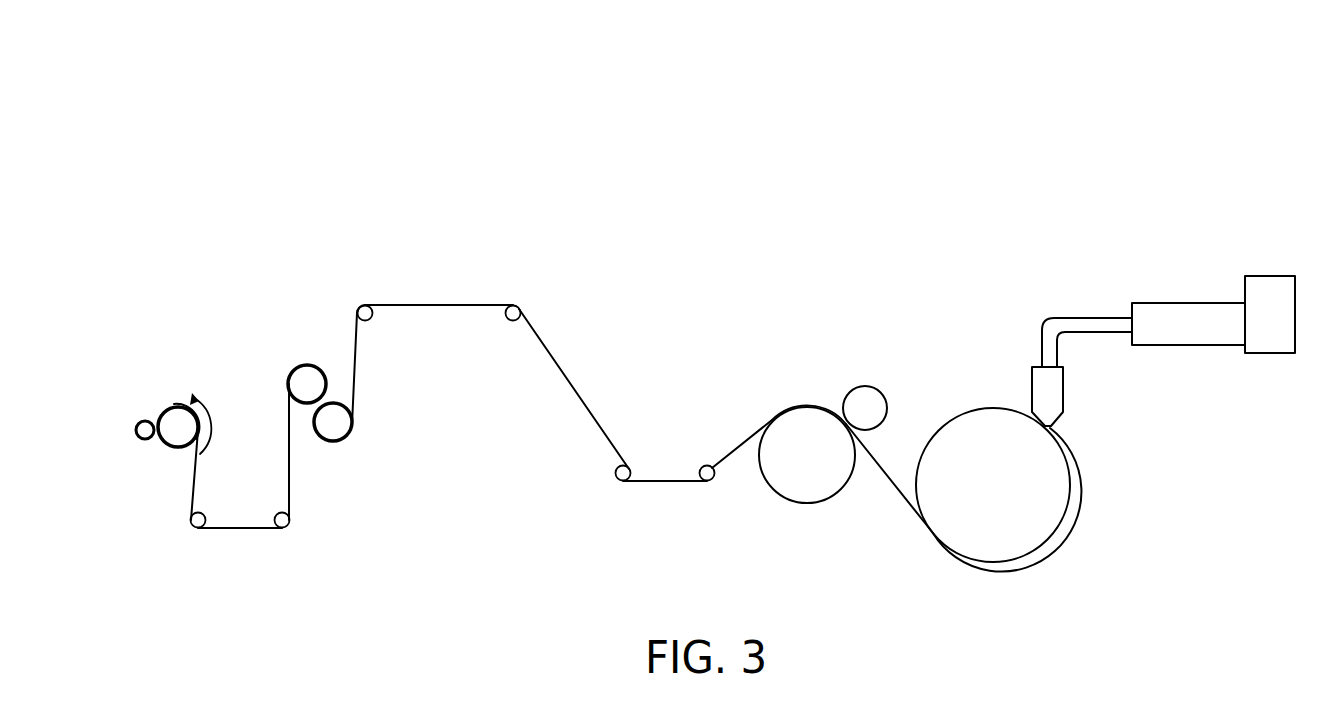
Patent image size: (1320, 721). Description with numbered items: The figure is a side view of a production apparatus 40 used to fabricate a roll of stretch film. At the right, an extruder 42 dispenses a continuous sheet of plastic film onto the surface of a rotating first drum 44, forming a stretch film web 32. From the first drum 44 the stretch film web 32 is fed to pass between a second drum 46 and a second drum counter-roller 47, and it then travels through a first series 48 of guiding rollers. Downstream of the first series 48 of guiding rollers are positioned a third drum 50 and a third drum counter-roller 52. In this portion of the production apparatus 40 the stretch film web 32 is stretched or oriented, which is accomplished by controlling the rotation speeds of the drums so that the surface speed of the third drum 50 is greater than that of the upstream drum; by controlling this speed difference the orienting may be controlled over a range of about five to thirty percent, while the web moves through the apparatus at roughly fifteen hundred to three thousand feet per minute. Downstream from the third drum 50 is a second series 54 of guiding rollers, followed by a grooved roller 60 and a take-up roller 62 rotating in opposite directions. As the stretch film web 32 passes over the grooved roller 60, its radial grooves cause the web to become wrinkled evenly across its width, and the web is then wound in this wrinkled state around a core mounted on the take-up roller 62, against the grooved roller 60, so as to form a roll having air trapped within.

The production apparatus 40 is at (1026, 144).
The extruder 42 is at (1089, 388).
The first drum 44 is at (972, 443).
The second drum 46 is at (818, 480).
The second drum counter-roller 47 is at (872, 402).
The stretch film web 32 is at (562, 377).
The first series of guiding rollers 48 is at (717, 507).
The third drum 50 is at (303, 390).
The third drum counter-roller 52 is at (337, 412).
The second series of guiding rollers 54 is at (295, 547).
The grooved roller 60 is at (178, 384).
The take-up roller 62 is at (118, 441).